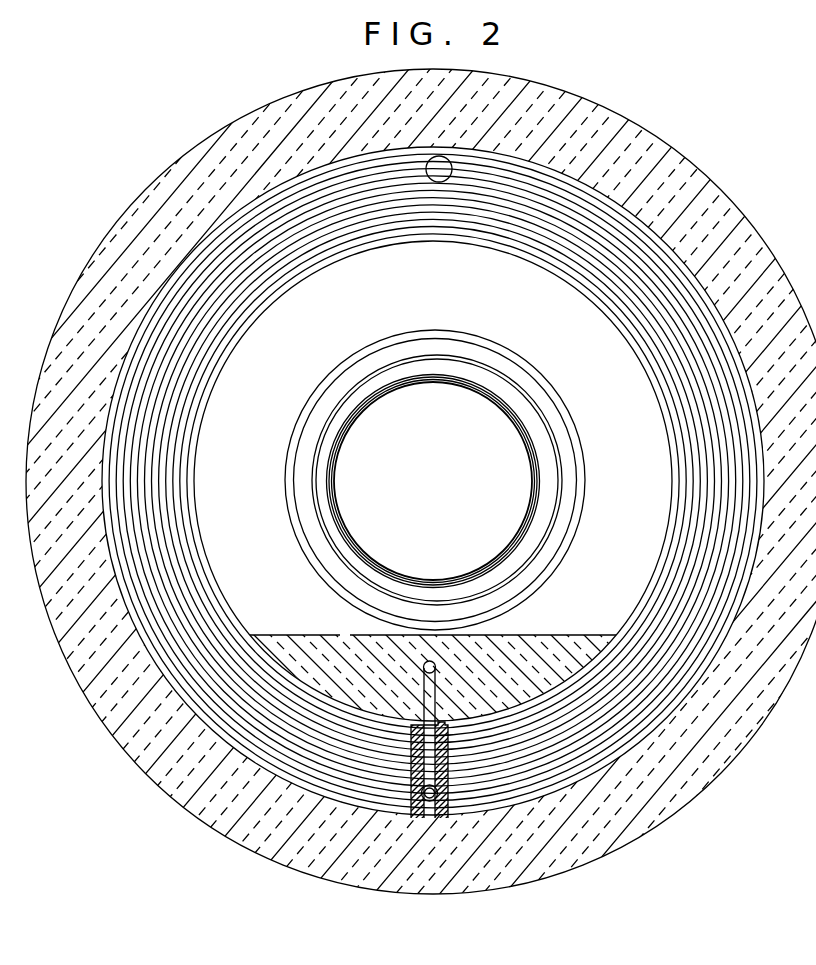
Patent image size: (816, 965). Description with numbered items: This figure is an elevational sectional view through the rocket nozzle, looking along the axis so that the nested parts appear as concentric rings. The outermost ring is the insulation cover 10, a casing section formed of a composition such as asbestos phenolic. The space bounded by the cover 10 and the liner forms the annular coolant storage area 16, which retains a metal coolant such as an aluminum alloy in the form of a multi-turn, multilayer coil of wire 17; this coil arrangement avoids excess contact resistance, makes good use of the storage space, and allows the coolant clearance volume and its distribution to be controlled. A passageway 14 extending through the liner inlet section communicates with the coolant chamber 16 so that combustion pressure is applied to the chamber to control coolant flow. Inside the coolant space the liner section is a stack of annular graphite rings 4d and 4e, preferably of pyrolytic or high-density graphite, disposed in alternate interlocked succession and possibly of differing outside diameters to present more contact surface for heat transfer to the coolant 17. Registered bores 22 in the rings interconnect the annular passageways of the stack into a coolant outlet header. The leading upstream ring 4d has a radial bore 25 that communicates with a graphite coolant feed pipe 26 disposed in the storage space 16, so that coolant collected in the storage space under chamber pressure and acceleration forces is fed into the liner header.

The insulation cover 10 is at (170, 166).
The annular coolant storage area 16 is at (530, 797).
The multi-turn multilayer coil of wire 17 is at (151, 305).
The passageway 14 is at (446, 165).
The annular graphite ring 4d is at (290, 413).
The annular graphite ring 4e is at (580, 485).
The registered bores 22 is at (436, 666).
The radial bore 25 is at (433, 696).
The coolant feed pipe 26 is at (448, 761).